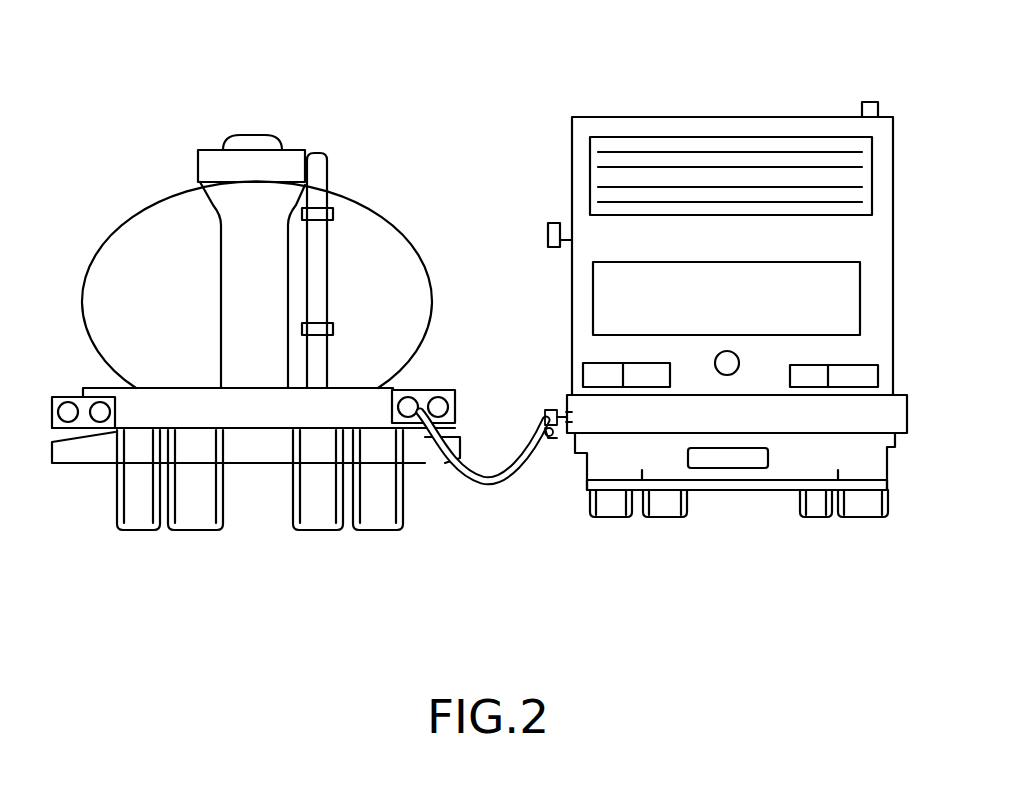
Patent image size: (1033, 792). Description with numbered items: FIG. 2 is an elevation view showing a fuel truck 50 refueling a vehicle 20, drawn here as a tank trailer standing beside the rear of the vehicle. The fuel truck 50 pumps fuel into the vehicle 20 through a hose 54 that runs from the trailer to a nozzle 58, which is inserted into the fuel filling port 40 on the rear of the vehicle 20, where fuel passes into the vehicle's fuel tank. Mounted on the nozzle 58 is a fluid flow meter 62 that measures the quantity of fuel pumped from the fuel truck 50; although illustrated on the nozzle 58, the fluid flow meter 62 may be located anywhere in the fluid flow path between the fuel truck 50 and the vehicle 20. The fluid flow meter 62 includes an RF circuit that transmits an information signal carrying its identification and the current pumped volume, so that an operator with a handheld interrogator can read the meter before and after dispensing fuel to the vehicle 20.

The vehicle 20 is at (767, 115).
The fuel truck 50 is at (375, 195).
The fuel filling port 40 is at (567, 395).
The fluid flow meter 62 is at (553, 410).
The hose 54 is at (472, 486).
The nozzle 58 is at (552, 442).